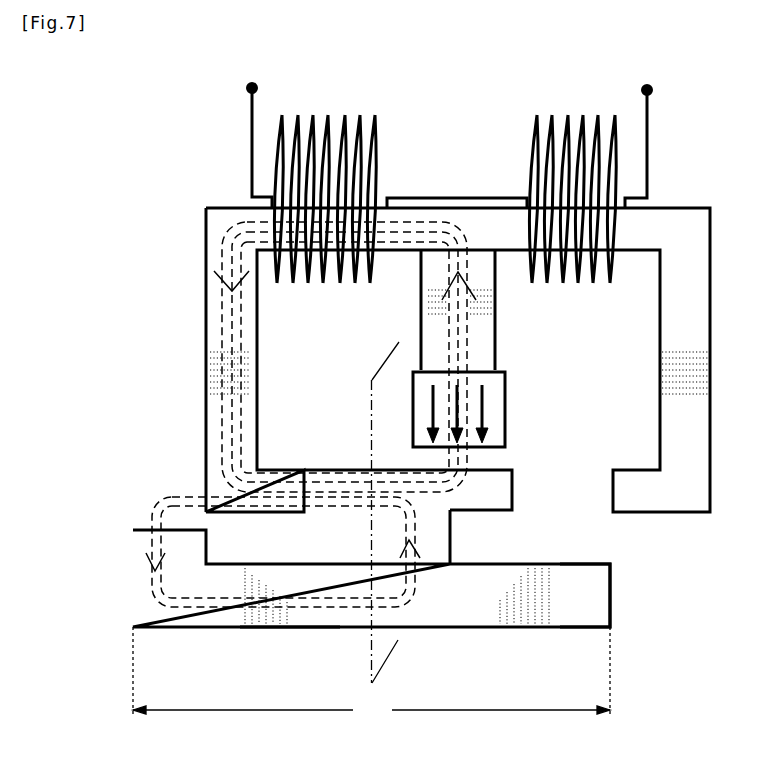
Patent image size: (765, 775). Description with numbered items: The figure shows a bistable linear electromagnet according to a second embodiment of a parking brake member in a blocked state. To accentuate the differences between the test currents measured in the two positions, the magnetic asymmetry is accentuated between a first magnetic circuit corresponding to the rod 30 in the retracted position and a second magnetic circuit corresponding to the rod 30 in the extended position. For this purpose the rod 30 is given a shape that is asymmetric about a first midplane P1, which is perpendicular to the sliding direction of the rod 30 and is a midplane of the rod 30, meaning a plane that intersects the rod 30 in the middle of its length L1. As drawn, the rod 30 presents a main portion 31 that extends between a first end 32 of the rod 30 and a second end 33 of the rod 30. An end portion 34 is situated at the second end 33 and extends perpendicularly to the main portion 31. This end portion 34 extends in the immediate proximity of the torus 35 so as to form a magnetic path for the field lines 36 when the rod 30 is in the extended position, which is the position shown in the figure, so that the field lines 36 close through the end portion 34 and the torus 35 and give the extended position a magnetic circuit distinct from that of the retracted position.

The rod 30 is at (382, 449).
The main portion 31 is at (290, 620).
The first end 32 is at (600, 597).
The second end 33 is at (132, 613).
The end portion 34 is at (133, 542).
The torus 35 is at (213, 317).
The field lines 36 is at (220, 415).
The first midplane P1 is at (371, 417).
The length L1 is at (371, 676).